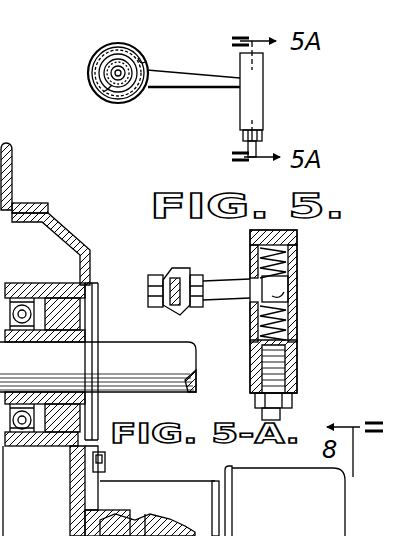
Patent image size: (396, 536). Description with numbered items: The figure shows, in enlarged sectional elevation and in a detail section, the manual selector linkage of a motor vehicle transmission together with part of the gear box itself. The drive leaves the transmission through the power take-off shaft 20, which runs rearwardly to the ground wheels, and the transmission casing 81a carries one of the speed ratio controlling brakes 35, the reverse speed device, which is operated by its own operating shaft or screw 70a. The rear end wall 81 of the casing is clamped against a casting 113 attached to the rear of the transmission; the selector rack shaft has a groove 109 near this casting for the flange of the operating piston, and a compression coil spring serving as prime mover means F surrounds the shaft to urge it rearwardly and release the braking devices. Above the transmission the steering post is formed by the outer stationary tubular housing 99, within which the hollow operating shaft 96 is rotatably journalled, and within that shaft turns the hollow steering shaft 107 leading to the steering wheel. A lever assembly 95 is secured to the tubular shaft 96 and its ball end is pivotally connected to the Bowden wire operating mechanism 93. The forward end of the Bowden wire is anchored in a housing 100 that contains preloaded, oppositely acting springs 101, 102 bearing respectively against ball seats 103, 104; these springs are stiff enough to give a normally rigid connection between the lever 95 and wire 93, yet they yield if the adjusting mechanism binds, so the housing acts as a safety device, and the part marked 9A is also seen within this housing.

In FIG. 5, the outer stationary tubular housing 99 is at (126, 46).
In FIG. 5, the tubular shaft 96 is at (140, 60).
In FIG. 5, the hollow steering shaft 107 is at (103, 92).
In FIG. 5, the lever assembly 95 is at (164, 90).
In FIG. 5-A, the lever assembly 95 is at (172, 270).
In FIG. 5, the housing 100 is at (265, 93).
In FIG. 5-A, the housing 100 is at (298, 346).
In FIG. 5, the Bowden wire operating mechanism 93 is at (256, 152).
In FIG. 5-A, the Bowden wire operating mechanism 93 is at (282, 414).
In FIG. 5-A, the speed ratio controlling brake 35 is at (18, 204).
In FIG. 5-A, the transmission casing 81a is at (62, 238).
In FIG. 5-A, the power take-off shaft 20 is at (174, 369).
In FIG. 5-A, the operating shaft or screw 70a is at (3, 503).
In FIG. 5-A, the rear end wall 81 is at (104, 486).
In FIG. 5-A, the casting 113 is at (157, 466).
In FIG. 5-A, the prime mover means F is at (106, 516).
In FIG. 5-A, the groove 109 is at (148, 516).
In FIG. 5-A, the spring 101 is at (256, 278).
In FIG. 5-A, the ball seat 103 is at (296, 264).
In FIG. 5-A, the piston head 9A is at (290, 288).
In FIG. 5-A, the ball seat 104 is at (292, 296).
In FIG. 5-A, the spring 102 is at (288, 320).